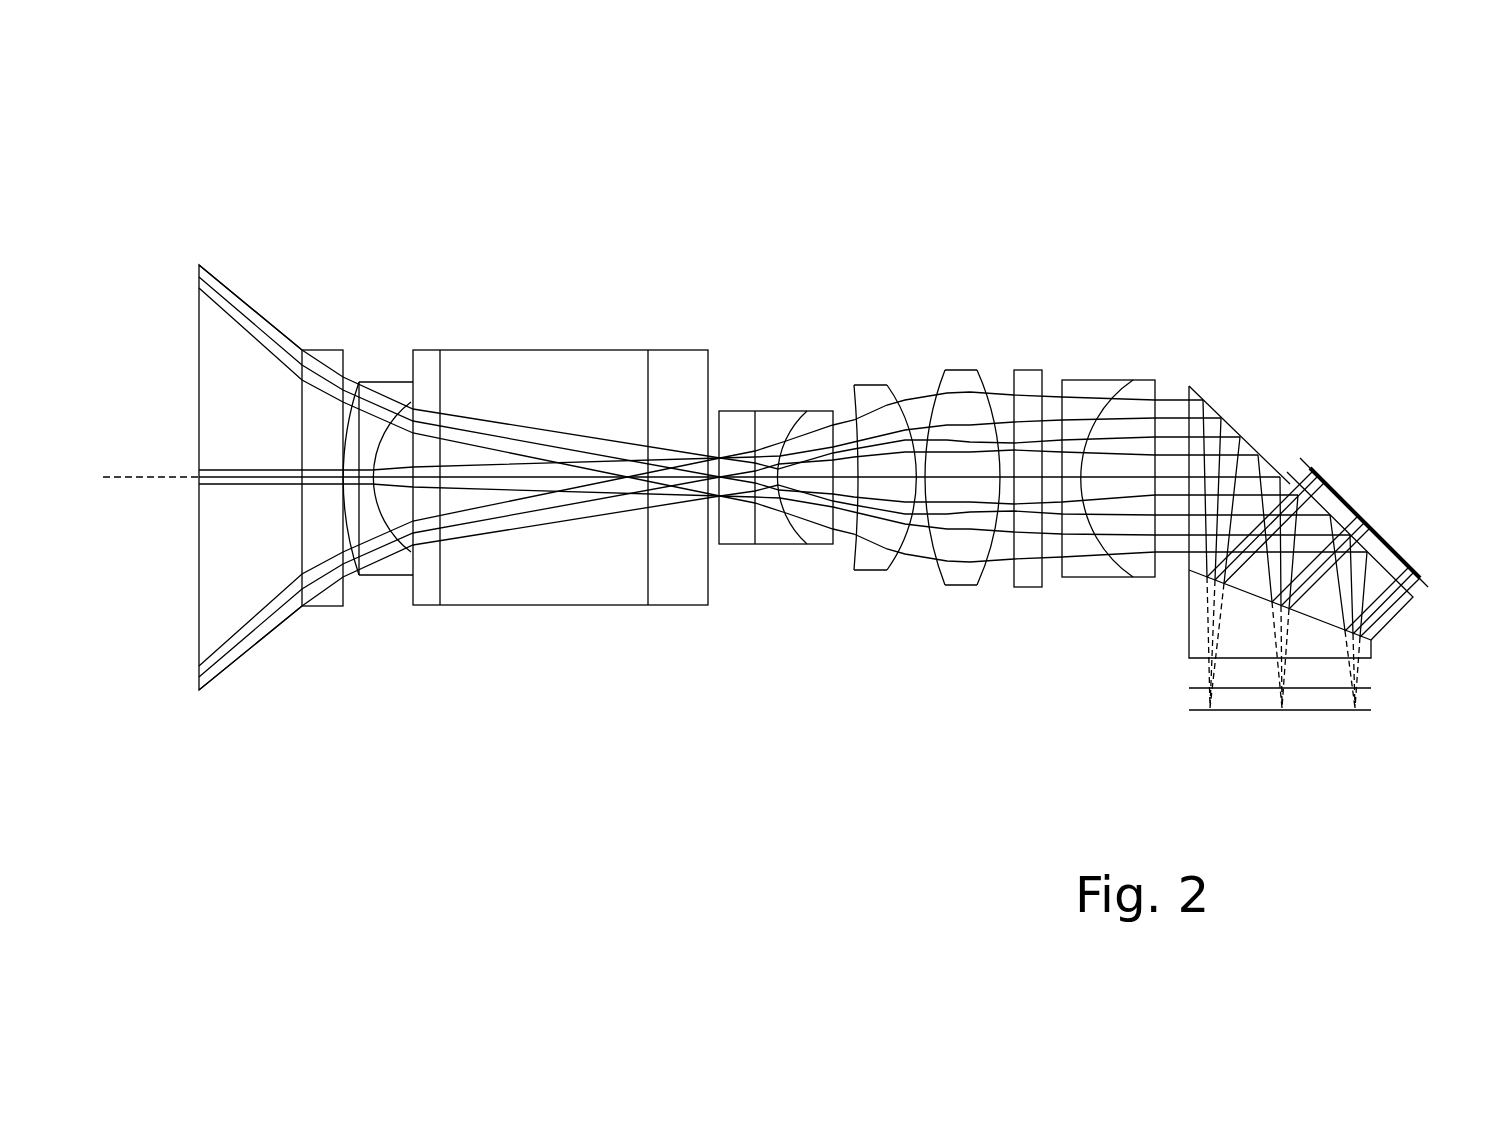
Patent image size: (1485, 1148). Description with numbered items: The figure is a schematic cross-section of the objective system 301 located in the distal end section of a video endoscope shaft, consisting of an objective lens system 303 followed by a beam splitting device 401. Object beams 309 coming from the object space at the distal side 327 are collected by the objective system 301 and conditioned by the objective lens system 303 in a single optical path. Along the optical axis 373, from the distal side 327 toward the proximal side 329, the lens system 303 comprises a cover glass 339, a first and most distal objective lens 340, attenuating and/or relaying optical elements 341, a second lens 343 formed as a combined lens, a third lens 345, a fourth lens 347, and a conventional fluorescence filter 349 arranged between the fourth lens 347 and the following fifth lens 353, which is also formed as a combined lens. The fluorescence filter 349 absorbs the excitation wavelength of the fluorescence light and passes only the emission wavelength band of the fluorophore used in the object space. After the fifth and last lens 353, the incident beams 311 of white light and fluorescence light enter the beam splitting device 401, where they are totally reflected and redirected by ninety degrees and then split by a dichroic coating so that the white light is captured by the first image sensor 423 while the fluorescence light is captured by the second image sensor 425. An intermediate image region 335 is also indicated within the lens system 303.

The objective system 301 is at (350, 175).
The objective lens system 303 is at (730, 318).
The object beams 309 is at (244, 300).
The incident beams 311 is at (1165, 400).
The distal side 327 is at (148, 677).
The proximal side 329 is at (1470, 685).
The intermediate image plate 335 is at (762, 455).
The cover glass 339 is at (325, 353).
The first objective lens 340 is at (385, 388).
The attenuating and/or relaying optical elements 341 is at (545, 366).
The second lens 343 is at (783, 420).
The third lens 345 is at (868, 562).
The fourth lens 347 is at (963, 578).
The fluorescence filter 349 is at (1028, 377).
The fifth lens 353 is at (1082, 390).
The optical axis 373 is at (135, 487).
The beam splitting device 401 is at (1303, 428).
The first image sensor 423 is at (1368, 522).
The second image sensor 425 is at (1262, 712).